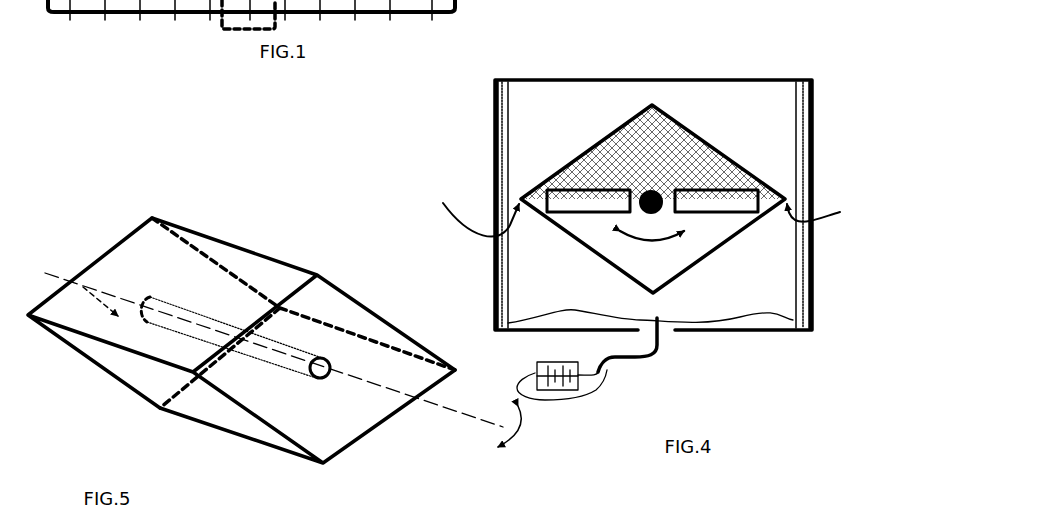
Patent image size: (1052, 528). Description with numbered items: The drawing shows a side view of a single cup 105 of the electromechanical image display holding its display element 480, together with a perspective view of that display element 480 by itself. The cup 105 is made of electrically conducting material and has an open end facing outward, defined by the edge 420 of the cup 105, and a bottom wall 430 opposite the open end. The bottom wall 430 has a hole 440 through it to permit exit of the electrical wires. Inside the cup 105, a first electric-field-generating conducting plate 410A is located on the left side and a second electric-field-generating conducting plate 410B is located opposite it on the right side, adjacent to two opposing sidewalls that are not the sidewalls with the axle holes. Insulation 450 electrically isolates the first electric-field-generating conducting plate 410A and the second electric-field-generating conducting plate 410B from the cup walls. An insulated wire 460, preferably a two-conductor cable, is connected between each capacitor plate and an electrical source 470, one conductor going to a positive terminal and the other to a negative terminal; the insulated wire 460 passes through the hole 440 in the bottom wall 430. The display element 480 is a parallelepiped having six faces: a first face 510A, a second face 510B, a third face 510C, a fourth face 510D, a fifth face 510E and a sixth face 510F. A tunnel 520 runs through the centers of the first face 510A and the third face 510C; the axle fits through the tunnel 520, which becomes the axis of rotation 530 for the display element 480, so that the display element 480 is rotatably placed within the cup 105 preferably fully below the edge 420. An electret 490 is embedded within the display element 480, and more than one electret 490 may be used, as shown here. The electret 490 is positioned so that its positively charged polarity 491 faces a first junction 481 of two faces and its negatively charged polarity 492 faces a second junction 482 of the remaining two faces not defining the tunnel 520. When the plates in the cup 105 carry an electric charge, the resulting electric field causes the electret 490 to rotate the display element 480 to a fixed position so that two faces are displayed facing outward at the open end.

In FIG. 4, the cup 105 is at (497, 265).
In FIG. 4, the first electric-field-generating conducting plate 410A is at (510, 122).
In FIG. 4, the second electric-field-generating conducting plate 410B is at (793, 115).
In FIG. 4, the edge 420 is at (812, 78).
In FIG. 4, the bottom wall 430 is at (713, 325).
In FIG. 4, the hole 440 is at (666, 337).
In FIG. 4, the insulation 450 is at (805, 320).
In FIG. 4, the insulated wire 460 is at (628, 360).
In FIG. 4, the electrical source 470 is at (555, 362).
In FIG. 4, the display element 480 is at (560, 165).
In FIG. 5, the display element 480 is at (167, 178).
In FIG. 4, the first junction 481 is at (469, 206).
In FIG. 4, the second junction 482 is at (830, 211).
In FIG. 4, the electret 490 is at (719, 200).
In FIG. 4, the positively charged polarity 491 is at (567, 208).
In FIG. 4, the negatively charged polarity 492 is at (750, 204).
In FIG. 5, the first face 510A is at (359, 394).
In FIG. 5, the second face 510B is at (158, 384).
In FIG. 5, the third face 510C is at (80, 277).
In FIG. 5, the fourth face 510D is at (303, 300).
In FIG. 5, the fifth face 510E is at (177, 281).
In FIG. 5, the sixth face 510F is at (326, 400).
In FIG. 5, the tunnel 520 is at (332, 368).
In FIG. 5, the axis of rotation 530 is at (495, 428).